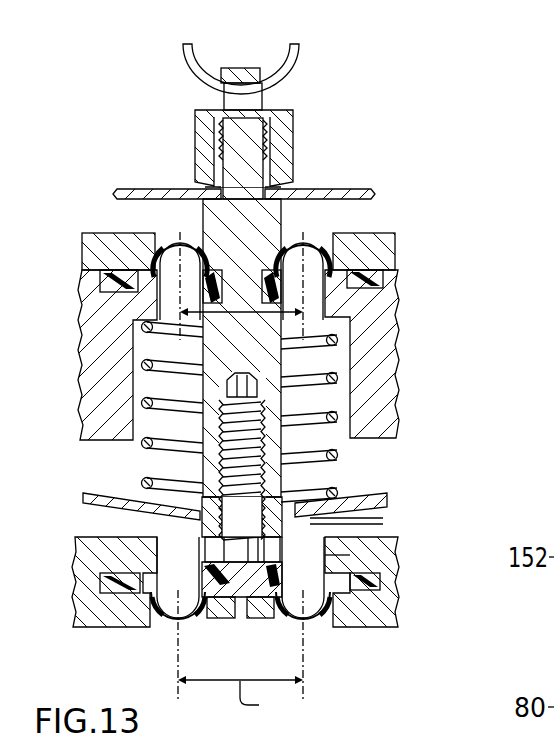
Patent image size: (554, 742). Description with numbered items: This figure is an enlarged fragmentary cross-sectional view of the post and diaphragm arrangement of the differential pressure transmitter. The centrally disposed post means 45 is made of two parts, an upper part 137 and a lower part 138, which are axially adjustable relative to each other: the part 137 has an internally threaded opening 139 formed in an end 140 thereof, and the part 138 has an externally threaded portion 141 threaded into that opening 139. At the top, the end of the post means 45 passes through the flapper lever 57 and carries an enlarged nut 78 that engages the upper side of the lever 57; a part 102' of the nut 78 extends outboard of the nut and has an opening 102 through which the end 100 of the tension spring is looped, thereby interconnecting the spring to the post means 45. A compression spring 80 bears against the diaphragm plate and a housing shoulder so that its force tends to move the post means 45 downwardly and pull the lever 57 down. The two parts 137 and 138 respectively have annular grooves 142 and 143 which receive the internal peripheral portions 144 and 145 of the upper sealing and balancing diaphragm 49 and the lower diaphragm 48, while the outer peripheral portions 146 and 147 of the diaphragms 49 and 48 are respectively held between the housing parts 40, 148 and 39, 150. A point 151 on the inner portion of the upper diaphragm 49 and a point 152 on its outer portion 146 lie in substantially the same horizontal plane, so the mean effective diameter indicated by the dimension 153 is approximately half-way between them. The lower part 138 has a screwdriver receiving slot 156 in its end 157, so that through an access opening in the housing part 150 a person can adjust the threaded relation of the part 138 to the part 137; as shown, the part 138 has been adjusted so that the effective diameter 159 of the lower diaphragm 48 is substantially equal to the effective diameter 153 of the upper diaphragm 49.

The end of tension spring 100 is at (298, 58).
The opening 102 is at (257, 48).
The part of nut 102' is at (188, 62).
The nut 78 is at (203, 134).
The annular groove 142 is at (260, 274).
The flapper lever 57 is at (137, 188).
The post means 45 is at (307, 193).
The part of post means 137 is at (194, 197).
The point 152 is at (147, 258).
The housing part 148 is at (393, 252).
The outer peripheral portion 146 is at (400, 278).
The housing part 40 is at (90, 327).
The point 151 is at (207, 257).
The sealing and balancing flexible diaphragm 49 is at (308, 252).
The internal peripheral portion 144 is at (300, 295).
The dimension 153 is at (243, 314).
The compression spring 80 is at (140, 407).
The externally threaded portion 141 is at (195, 481).
The internally threaded opening 139 is at (290, 470).
The end of part 140 is at (320, 524).
The part of post means 138 is at (163, 540).
The annular groove 143 is at (252, 617).
The housing part 39 is at (90, 556).
The housing part 150 is at (100, 624).
The outer peripheral portion 147 is at (350, 592).
The internal peripheral portion 145 is at (283, 583).
The sealing and balancing flexible diaphragm 48 is at (170, 623).
The end of part 157 is at (280, 623).
The screwdriver receiving slot 156 is at (223, 625).
The effective diameter 159 is at (268, 703).